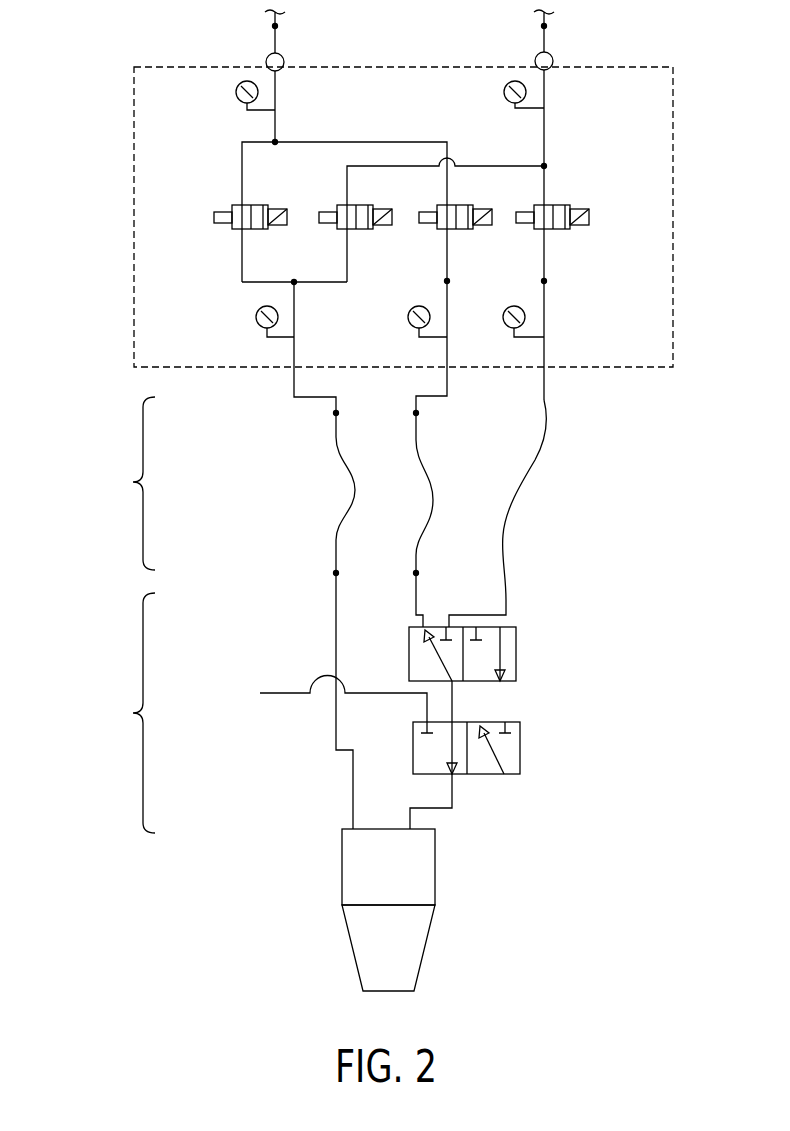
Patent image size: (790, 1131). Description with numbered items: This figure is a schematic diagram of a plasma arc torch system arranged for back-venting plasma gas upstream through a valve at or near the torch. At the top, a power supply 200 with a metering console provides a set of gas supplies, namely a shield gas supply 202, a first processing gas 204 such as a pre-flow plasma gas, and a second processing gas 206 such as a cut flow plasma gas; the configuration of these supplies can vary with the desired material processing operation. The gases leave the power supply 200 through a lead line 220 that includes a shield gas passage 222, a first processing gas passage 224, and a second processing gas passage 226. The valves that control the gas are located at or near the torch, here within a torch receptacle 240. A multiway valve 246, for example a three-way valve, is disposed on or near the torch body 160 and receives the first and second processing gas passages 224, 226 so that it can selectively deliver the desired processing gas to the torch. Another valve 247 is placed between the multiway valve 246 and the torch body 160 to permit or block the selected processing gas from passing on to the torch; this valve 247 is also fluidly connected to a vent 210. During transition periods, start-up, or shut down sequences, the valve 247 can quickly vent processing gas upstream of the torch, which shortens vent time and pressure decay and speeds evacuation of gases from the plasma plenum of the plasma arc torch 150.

The power supply 200 is at (133, 317).
The shield gas supply 202 is at (222, 350).
The first processing gas 204 is at (397, 340).
The second processing gas 206 is at (593, 253).
The vent 210 is at (243, 691).
The lead line 220 is at (126, 483).
The shield gas passage 222 is at (336, 537).
The first processing gas passage 224 is at (450, 481).
The second processing gas passage 226 is at (567, 411).
The torch receptacle 240 is at (126, 713).
The multiway valve 246 is at (538, 648).
The valve 247 is at (558, 757).
The torch body 160 is at (306, 870).
The plasma arc torch 150 is at (405, 955).